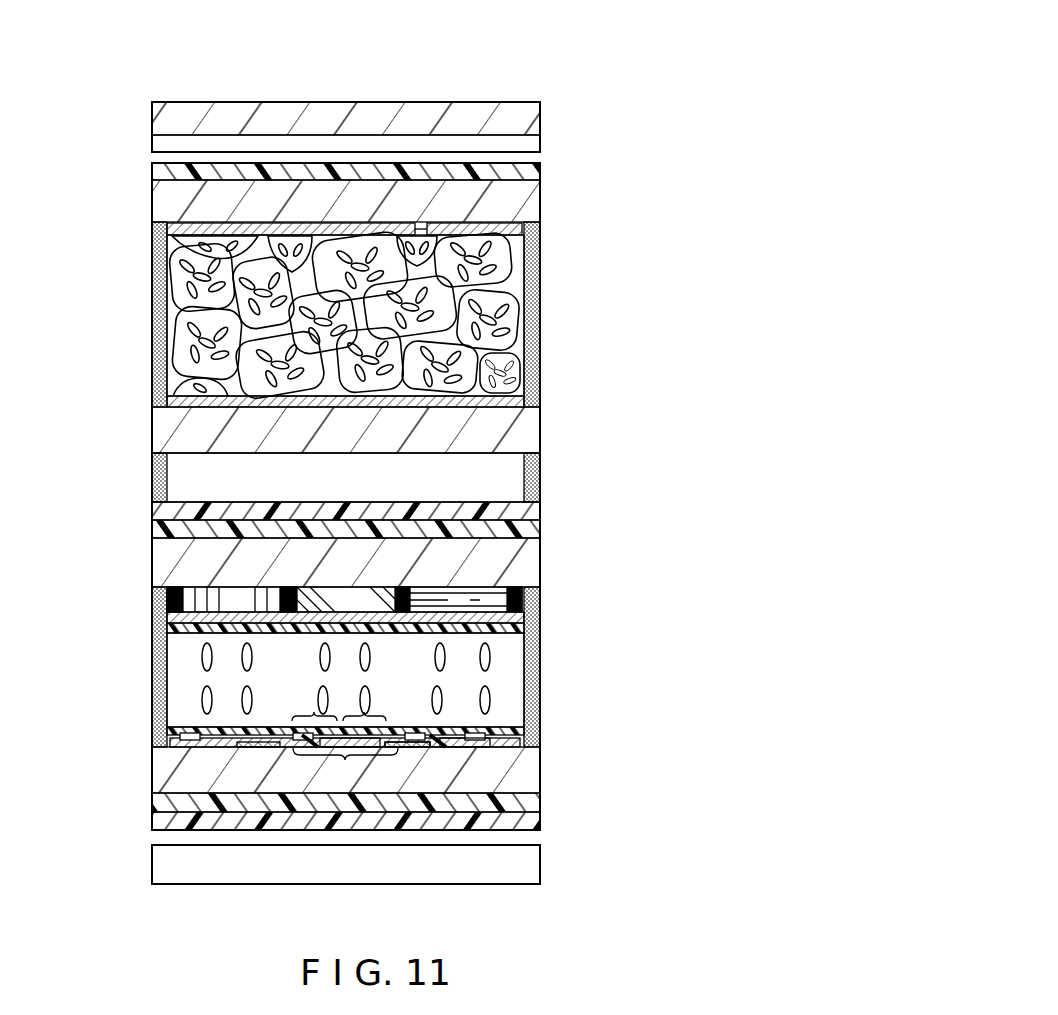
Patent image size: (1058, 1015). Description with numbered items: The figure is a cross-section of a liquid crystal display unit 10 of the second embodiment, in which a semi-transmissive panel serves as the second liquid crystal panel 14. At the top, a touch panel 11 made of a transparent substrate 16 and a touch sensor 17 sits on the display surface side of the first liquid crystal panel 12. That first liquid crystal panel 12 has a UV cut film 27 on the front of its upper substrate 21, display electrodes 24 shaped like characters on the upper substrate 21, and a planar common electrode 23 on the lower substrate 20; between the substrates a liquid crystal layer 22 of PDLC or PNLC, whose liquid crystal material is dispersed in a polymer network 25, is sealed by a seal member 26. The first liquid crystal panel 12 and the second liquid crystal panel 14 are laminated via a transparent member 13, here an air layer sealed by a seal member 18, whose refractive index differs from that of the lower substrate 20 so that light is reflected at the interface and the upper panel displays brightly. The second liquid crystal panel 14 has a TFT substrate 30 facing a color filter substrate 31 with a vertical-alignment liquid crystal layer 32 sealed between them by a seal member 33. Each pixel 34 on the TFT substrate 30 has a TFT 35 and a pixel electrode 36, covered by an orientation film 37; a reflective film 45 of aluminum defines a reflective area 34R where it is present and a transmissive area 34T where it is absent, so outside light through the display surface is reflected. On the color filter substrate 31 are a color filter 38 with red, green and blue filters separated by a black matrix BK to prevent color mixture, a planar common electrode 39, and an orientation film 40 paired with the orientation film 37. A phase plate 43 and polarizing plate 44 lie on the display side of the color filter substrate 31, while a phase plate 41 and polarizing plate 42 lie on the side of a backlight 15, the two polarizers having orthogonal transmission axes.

The liquid crystal display unit 10 is at (362, 76).
The touch panel 11 is at (346, 129).
The first liquid crystal panel 12 is at (461, 306).
The transparent member 13 is at (346, 477).
The second liquid crystal panel 14 is at (479, 717).
The backlight 15 is at (540, 866).
The transparent substrate 16 is at (540, 121).
The touch sensor 17 is at (540, 149).
The seal member 18 is at (540, 481).
The lower substrate 20 is at (540, 436).
The upper substrate 21 is at (540, 204).
The liquid crystal layer 22 is at (505, 292).
The common electrode 23 is at (524, 405).
The display electrodes 24 is at (540, 230).
The polymer network 25 is at (540, 370).
The seal member 26 is at (540, 266).
The UV cut film 27 is at (540, 177).
The TFT substrate 30 is at (540, 786).
The color filter substrate 31 is at (540, 569).
The liquid crystal layer 32 is at (505, 668).
The seal member 33 is at (540, 643).
The pixel 34 is at (345, 760).
The transmissive area 34T is at (300, 711).
The reflective area 34R is at (382, 711).
The TFT 35 is at (470, 745).
The pixel electrode 36 is at (433, 740).
The orientation film 37 is at (500, 731).
The color filter 38 is at (400, 578).
The common electrode 39 is at (540, 611).
The orientation film 40 is at (540, 628).
The phase plate 41 is at (540, 806).
The polarizing plate 42 is at (540, 827).
The phase plate 43 is at (540, 541).
The polarizing plate 44 is at (540, 516).
The reflective film 45 is at (472, 749).
The black matrix BK is at (402, 586).